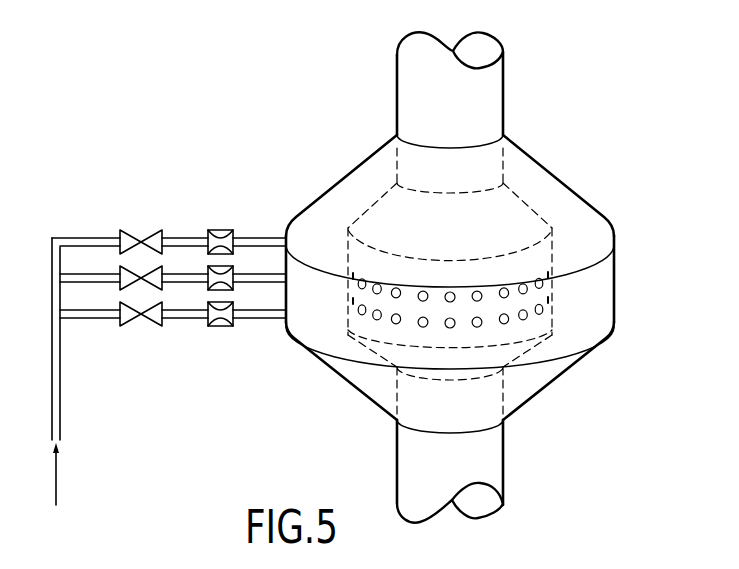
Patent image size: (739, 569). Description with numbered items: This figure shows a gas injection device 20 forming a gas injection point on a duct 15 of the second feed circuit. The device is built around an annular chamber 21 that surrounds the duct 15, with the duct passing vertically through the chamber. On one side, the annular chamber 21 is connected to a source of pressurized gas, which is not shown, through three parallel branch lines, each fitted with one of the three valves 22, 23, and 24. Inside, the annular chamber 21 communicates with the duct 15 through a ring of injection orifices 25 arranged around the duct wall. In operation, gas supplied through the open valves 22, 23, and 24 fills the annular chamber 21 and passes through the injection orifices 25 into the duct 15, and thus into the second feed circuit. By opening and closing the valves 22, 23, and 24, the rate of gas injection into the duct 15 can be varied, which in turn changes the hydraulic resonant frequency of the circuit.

The duct 15 is at (488, 108).
The gas injection device 20 is at (632, 319).
The annular chamber 21 is at (608, 277).
The valve 22 is at (131, 233).
The valve 23 is at (124, 272).
The valve 24 is at (132, 314).
The injection orifices 25 is at (550, 367).